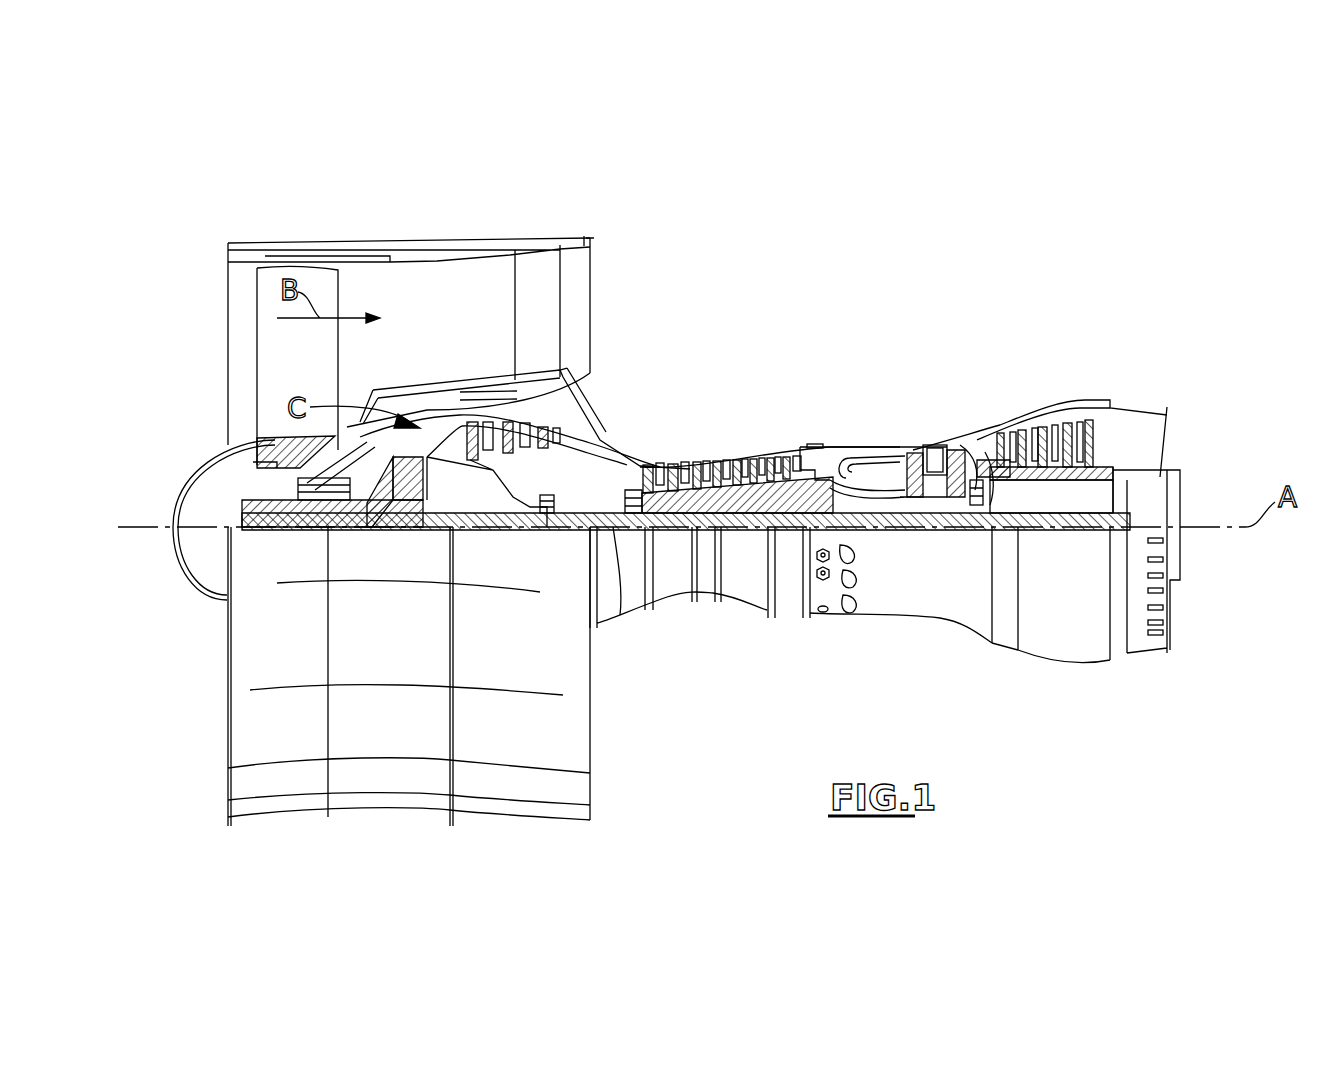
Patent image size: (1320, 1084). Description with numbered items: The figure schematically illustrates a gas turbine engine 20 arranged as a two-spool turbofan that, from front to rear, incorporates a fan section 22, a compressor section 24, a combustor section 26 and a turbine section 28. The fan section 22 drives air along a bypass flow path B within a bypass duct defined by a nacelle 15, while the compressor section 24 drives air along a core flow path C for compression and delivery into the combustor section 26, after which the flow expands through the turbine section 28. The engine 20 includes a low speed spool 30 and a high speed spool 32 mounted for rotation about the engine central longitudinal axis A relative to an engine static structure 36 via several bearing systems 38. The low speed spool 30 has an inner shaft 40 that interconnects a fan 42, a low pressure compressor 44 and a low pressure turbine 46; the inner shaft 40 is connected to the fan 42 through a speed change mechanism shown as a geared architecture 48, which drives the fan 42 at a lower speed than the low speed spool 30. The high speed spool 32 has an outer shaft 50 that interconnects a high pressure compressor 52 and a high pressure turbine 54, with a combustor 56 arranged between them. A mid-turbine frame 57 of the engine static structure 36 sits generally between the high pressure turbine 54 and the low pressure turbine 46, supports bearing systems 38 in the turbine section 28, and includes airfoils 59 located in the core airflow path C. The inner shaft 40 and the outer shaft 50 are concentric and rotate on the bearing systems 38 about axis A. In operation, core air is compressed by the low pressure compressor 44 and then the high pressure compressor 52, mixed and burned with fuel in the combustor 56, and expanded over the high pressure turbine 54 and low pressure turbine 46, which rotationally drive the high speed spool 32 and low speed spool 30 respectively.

The nacelle 15 is at (405, 245).
The gas turbine engine 20 is at (862, 296).
The fan section 22 is at (338, 234).
The compressor section 24 is at (633, 438).
The combustor section 26 is at (857, 425).
The turbine section 28 is at (1005, 392).
The low speed spool 30 is at (748, 542).
The high speed spool 32 is at (795, 470).
The engine static structure 36 is at (789, 627).
The bearing systems 38 is at (551, 506).
The inner shaft 40 is at (620, 615).
The fan 42 is at (315, 371).
The low pressure compressor 44 is at (507, 432).
The low pressure turbine 46 is at (1055, 420).
The geared architecture 48 is at (421, 511).
The outer shaft 50 is at (875, 505).
The high pressure compressor 52 is at (727, 500).
The high pressure turbine 54 is at (928, 447).
The combustor 56 is at (860, 470).
The mid-turbine frame 57 is at (968, 440).
The airfoils 59 is at (1000, 495).